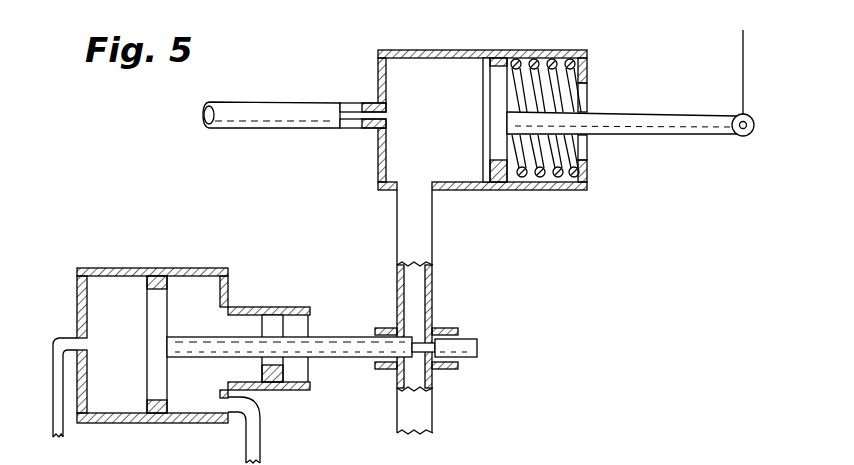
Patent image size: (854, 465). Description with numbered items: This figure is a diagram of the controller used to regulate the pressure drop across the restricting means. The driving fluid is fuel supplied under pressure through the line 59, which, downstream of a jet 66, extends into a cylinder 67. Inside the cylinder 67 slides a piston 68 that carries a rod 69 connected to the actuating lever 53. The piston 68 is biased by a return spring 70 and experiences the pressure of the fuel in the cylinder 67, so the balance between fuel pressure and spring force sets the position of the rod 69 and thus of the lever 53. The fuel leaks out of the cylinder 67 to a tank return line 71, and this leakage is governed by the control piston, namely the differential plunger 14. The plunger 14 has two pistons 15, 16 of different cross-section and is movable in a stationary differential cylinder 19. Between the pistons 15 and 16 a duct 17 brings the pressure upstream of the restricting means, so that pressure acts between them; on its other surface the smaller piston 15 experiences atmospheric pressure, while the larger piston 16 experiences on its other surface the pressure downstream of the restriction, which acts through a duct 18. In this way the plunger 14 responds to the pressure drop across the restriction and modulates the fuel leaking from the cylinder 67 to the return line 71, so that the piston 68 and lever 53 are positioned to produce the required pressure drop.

The differential plunger 14 is at (203, 347).
The smaller piston 15 is at (272, 330).
The larger piston 16 is at (157, 283).
The duct 17 is at (262, 442).
The duct 18 is at (52, 348).
The differential cylinder 19 is at (108, 424).
The actuating lever 53 is at (743, 43).
The line 59 is at (297, 92).
The jet 66 is at (362, 118).
The cylinder 67 is at (447, 73).
The piston 68 is at (498, 163).
The rod 69 is at (660, 113).
The return spring 70 is at (567, 58).
The tank return line 71 is at (422, 415).